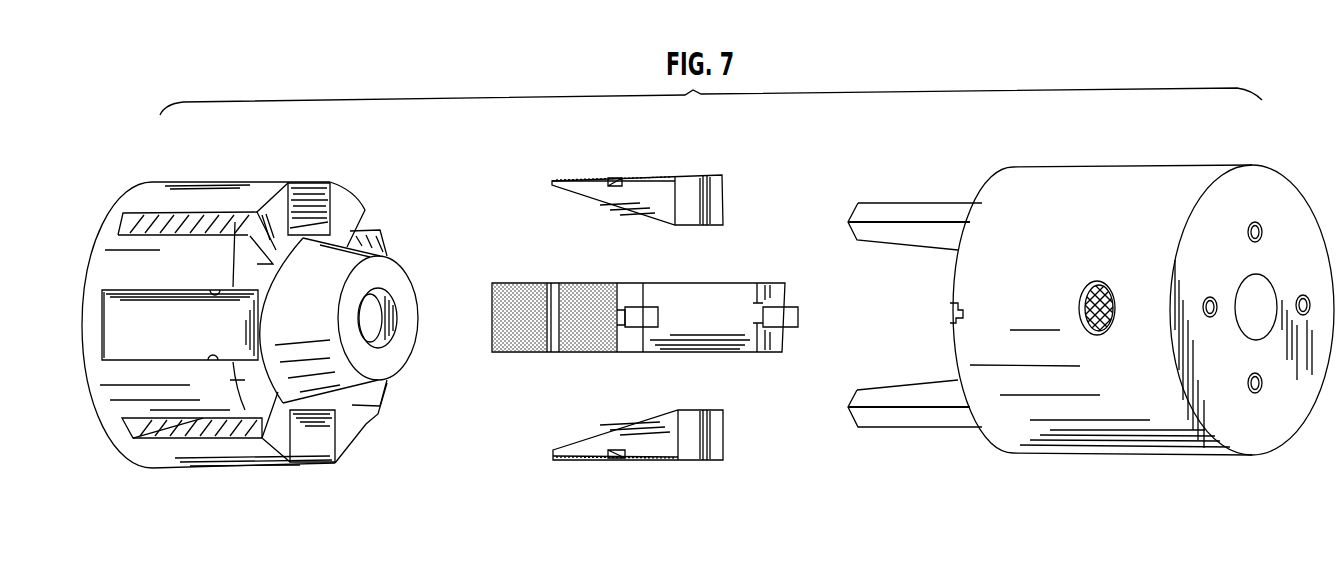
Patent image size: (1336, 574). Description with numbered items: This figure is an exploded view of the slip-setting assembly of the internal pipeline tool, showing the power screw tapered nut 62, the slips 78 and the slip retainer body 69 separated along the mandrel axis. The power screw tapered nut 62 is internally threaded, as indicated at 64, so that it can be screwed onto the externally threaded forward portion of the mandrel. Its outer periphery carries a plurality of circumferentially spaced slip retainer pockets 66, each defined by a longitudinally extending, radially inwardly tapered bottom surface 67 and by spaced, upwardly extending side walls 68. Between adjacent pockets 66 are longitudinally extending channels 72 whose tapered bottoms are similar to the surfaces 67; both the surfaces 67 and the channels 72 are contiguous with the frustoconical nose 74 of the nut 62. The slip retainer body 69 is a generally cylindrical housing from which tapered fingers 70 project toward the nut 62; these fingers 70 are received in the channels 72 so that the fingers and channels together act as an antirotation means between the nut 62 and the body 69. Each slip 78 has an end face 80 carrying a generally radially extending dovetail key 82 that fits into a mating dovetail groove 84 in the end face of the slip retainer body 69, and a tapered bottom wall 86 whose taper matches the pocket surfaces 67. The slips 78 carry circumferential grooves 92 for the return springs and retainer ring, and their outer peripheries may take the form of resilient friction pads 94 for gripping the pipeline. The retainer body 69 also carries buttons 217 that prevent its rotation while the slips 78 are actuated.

The power screw tapered nut 62 is at (100, 207).
The internal threads 64 is at (372, 330).
The slip retainer pockets 66 is at (112, 315).
The tapered bottom surfaces 67 is at (142, 349).
The side walls 68 is at (215, 289).
The slip retainer body 69 is at (1181, 168).
The fingers 70 is at (922, 205).
The channels 72 is at (252, 222).
The frustoconical nose 74 is at (400, 268).
The slips 78 is at (578, 168).
The end face 80 is at (722, 190).
The dovetail key 82 is at (703, 180).
The dovetail grooves 84 is at (963, 314).
The bottom walls 86 is at (651, 224).
The circumferential grooves 92 is at (612, 180).
The resilient friction pads 94 is at (580, 292).
The buttons 217 is at (1110, 292).